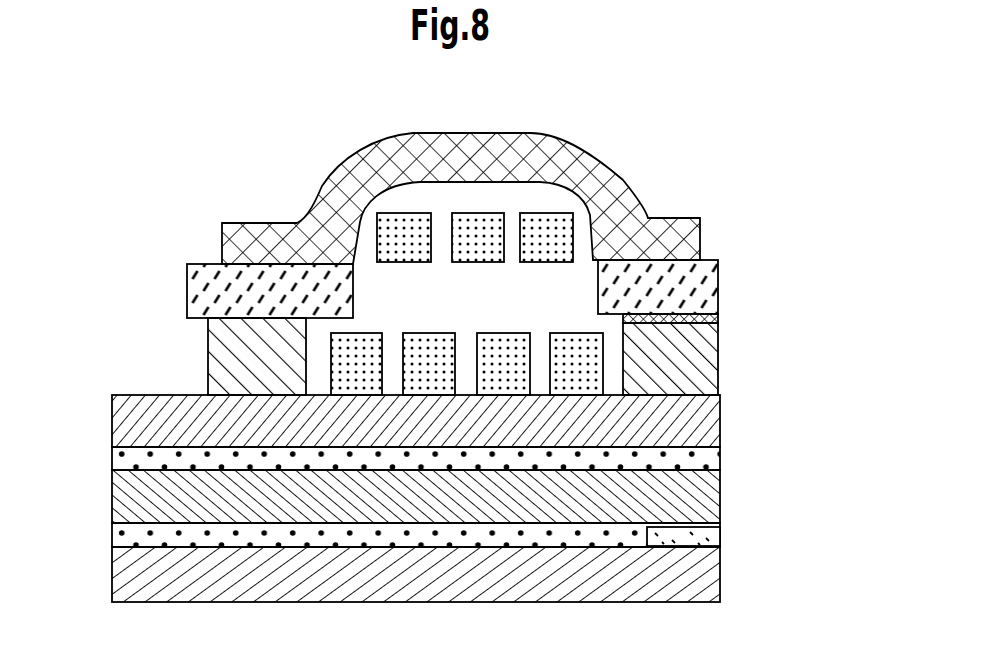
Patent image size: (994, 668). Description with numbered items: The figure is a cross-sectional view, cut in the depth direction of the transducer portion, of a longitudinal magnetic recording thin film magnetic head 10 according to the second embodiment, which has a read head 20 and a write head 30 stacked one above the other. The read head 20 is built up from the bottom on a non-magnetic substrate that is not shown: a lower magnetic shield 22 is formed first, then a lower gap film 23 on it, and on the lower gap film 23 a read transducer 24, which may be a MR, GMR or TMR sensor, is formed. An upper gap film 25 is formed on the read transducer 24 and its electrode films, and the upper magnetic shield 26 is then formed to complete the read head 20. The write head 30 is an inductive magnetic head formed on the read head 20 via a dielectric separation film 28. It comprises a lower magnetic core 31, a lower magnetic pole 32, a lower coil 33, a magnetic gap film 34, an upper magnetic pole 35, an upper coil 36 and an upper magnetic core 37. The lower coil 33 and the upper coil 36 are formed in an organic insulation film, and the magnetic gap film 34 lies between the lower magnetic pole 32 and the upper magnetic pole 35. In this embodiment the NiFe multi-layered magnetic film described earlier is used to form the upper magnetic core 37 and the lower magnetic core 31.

The thin film magnetic head 10 is at (616, 119).
The read head 20 is at (823, 467).
The lower magnetic shield 22 is at (705, 572).
The lower gap film 23 is at (722, 548).
The read transducer 24 is at (722, 537).
The upper gap film 25 is at (720, 527).
The upper magnetic shield 26 is at (703, 497).
The dielectric separation film 28 is at (703, 460).
The write head 30 is at (818, 178).
The lower magnetic core 31 is at (700, 405).
The lower magnetic pole 32 is at (700, 368).
The lower coil 33 is at (577, 358).
The magnetic gap film 34 is at (720, 315).
The upper magnetic pole 35 is at (703, 280).
The upper coil 36 is at (553, 230).
The upper magnetic core 37 is at (688, 233).